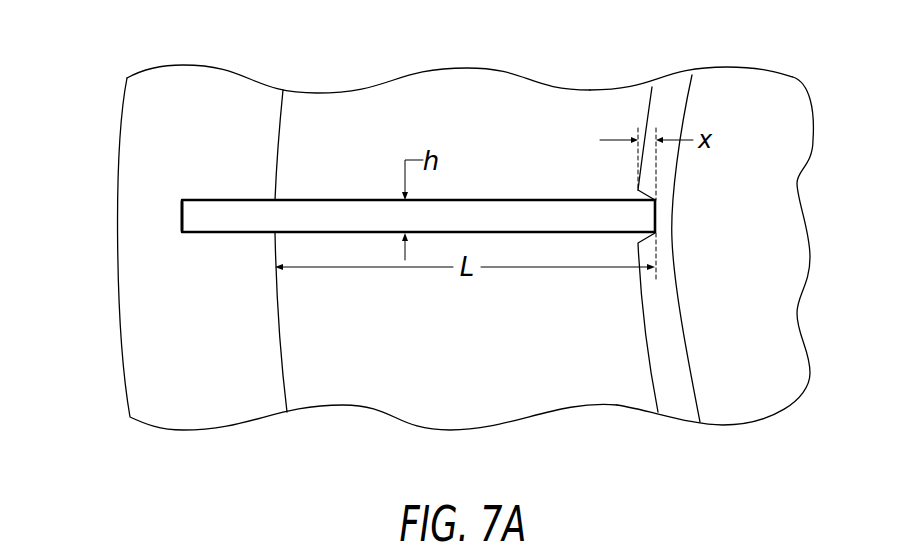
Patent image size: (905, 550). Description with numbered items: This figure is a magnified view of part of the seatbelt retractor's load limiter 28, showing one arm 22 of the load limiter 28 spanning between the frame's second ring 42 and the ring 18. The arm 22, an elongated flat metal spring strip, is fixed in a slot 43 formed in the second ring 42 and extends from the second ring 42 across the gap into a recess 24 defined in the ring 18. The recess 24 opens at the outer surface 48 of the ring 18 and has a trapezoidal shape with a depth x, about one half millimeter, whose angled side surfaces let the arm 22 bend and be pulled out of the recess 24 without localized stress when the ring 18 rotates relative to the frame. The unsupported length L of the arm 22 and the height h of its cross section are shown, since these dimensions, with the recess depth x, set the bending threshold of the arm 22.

The ring 18 is at (750, 130).
The arm 22 is at (362, 200).
The recess 24 is at (648, 195).
The load limiter 28 is at (636, 121).
The second ring 42 is at (118, 135).
The slot 43 is at (180, 212).
The outer surface 48 is at (643, 330).